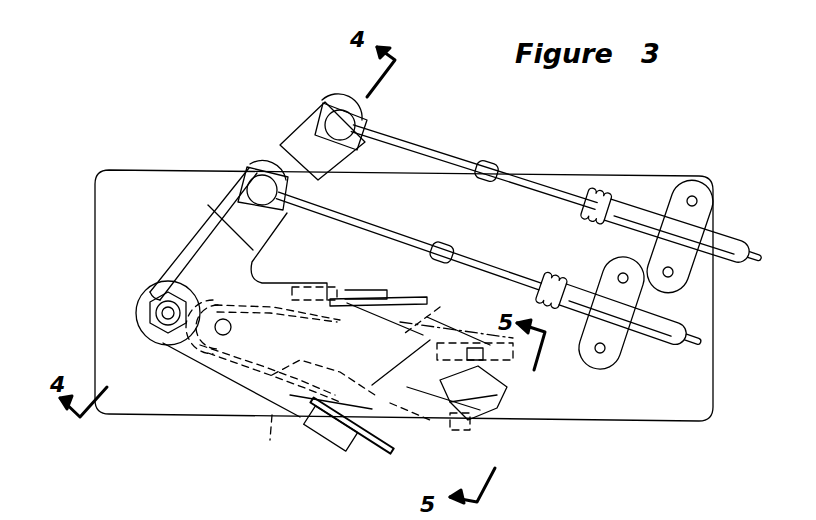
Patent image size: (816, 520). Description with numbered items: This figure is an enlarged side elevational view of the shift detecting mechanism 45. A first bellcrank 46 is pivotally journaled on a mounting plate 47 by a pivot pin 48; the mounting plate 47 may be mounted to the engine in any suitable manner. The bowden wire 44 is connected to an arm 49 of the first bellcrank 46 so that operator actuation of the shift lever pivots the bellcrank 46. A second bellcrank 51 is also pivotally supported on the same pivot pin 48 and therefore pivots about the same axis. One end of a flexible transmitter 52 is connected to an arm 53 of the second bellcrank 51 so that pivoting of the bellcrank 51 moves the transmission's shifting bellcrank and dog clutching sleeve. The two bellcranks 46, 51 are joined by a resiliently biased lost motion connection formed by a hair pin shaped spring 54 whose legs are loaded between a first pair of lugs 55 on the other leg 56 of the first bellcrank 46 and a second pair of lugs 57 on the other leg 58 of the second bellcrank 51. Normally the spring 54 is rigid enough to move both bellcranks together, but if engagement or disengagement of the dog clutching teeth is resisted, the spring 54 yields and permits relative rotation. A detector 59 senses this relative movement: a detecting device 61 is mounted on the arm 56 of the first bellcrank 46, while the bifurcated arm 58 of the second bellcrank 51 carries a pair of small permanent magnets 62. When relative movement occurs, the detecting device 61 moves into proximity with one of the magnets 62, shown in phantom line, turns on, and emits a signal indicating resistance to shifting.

The bowden wire 44 is at (556, 203).
The shift detecting mechanism 45 is at (269, 109).
The first bellcrank 46 is at (303, 124).
The mounting plate 47 is at (385, 295).
The pivot pin 48 is at (158, 302).
The arm 49 is at (303, 233).
The second bellcrank 51 is at (197, 234).
The flexible transmitter 52 is at (489, 274).
The arm 53 is at (207, 217).
The hair pin shaped spring 54 is at (351, 442).
The first pair of lugs 55 is at (365, 366).
The leg 56 is at (401, 344).
The second pair of lugs 57 is at (308, 354).
The leg 58 is at (231, 380).
The detector 59 is at (476, 430).
The detecting device 61 is at (499, 408).
The permanent magnets 62 is at (507, 412).